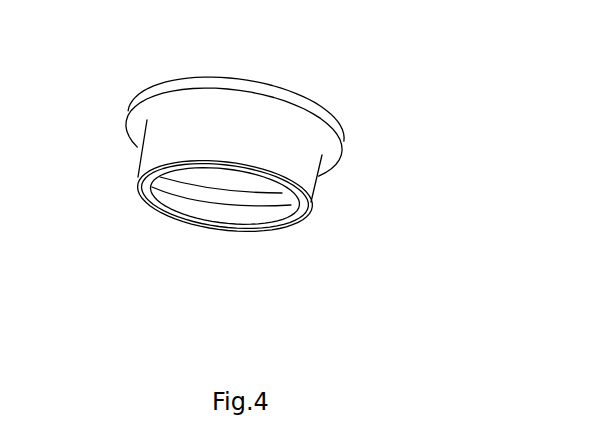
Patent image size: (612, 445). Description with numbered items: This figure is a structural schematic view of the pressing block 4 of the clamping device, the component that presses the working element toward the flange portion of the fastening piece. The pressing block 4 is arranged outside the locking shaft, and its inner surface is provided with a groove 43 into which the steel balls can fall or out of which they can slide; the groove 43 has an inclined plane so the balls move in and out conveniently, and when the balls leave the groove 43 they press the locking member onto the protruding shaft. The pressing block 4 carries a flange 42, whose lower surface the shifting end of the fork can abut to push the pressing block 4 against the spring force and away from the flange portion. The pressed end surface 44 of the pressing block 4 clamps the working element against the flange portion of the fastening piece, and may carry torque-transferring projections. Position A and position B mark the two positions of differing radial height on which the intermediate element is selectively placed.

The pressing block 4 is at (357, 180).
The flange 42 is at (178, 82).
The groove 43 is at (263, 217).
The pressed end surface 44 is at (143, 208).
The position A is at (193, 192).
The position B is at (240, 217).